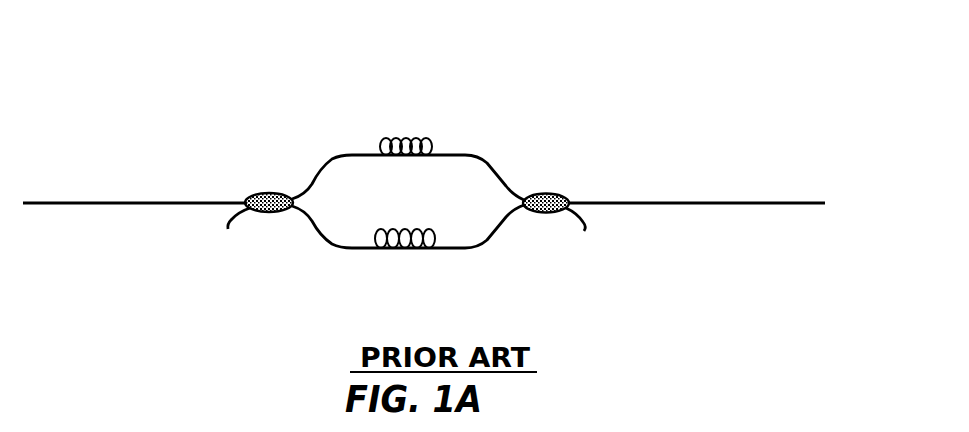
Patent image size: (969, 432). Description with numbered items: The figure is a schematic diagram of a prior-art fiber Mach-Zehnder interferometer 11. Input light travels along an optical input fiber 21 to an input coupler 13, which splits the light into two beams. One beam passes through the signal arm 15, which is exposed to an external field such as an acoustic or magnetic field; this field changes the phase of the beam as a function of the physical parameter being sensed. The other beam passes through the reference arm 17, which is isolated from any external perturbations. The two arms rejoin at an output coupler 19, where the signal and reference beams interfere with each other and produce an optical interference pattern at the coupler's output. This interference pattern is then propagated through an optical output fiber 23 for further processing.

The fiber Mach-Zehnder interferometer 11 is at (340, 88).
The input coupler 13 is at (263, 192).
The signal arm 15 is at (386, 139).
The reference arm 17 is at (392, 250).
The output coupler 19 is at (530, 195).
The optical input fiber 21 is at (205, 201).
The optical output fiber 23 is at (662, 201).